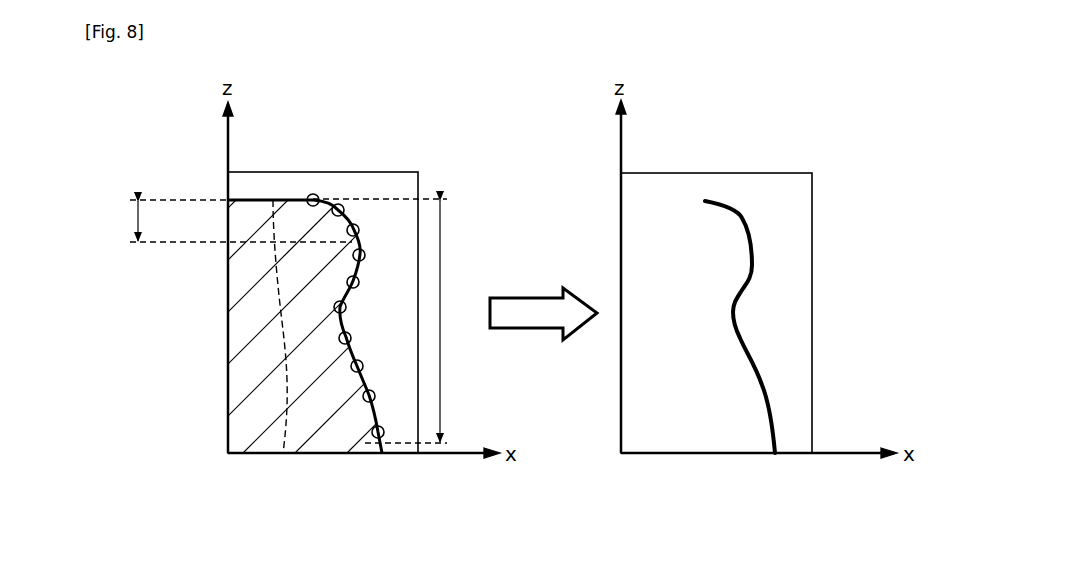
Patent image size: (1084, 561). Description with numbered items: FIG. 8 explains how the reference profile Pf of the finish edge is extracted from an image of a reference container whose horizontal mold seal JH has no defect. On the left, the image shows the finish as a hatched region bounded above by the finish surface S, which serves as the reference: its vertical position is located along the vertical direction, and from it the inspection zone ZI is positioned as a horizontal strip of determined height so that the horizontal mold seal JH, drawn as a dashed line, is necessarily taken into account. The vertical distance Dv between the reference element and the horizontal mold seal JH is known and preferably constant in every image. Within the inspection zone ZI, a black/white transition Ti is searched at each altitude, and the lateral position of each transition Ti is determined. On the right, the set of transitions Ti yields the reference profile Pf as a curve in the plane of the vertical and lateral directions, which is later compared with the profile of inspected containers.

The finish surface S is at (264, 198).
The initial region / blank outline IR is at (330, 183).
The vertical distance Dv is at (225, 221).
The horizontal mold seal JH is at (257, 246).
The reference profile of the finish edge Pf is at (344, 308).
The transition Ti is at (377, 395).
The inspection zone ZI is at (390, 321).